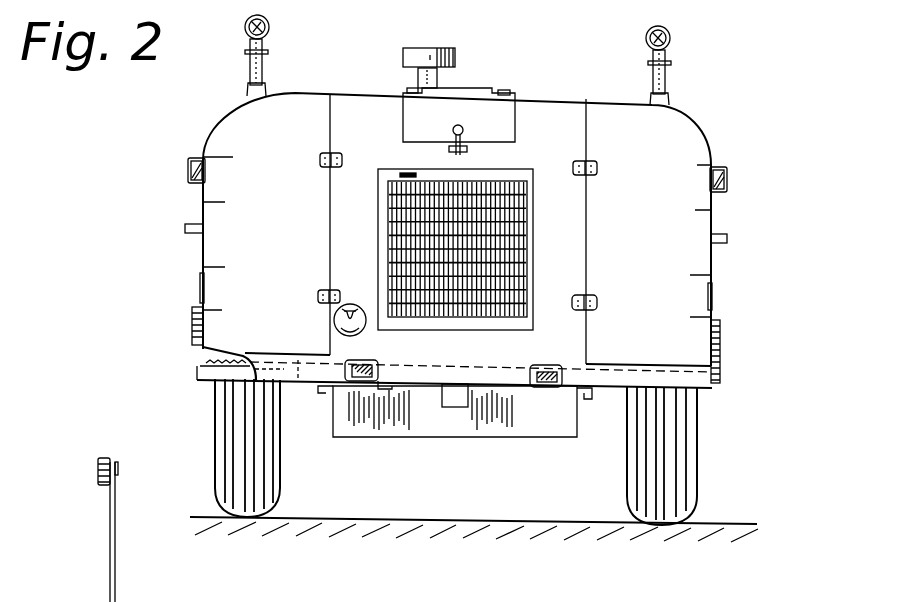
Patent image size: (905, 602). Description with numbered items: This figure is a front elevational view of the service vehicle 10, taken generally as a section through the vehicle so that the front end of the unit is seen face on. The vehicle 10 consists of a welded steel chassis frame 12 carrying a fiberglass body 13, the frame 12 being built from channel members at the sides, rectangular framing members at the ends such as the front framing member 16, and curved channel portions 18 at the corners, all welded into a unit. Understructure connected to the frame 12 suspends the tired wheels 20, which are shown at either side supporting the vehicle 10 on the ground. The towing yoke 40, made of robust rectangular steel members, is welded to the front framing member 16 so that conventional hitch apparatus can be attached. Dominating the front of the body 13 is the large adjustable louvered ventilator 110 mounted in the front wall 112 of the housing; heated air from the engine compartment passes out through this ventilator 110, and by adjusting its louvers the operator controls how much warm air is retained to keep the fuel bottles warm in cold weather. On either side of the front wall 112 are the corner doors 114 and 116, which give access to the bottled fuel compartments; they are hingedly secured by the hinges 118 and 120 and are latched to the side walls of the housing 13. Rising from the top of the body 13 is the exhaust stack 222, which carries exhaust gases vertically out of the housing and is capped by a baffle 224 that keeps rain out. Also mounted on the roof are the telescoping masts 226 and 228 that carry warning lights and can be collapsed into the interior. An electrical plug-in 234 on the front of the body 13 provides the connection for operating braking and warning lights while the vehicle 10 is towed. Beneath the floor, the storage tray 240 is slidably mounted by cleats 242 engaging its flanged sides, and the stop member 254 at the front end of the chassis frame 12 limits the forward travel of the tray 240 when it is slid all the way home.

The service vehicle 10 is at (750, 307).
The chassis frame 12 is at (578, 184).
The body 13 is at (560, 100).
The rectangular end framing member 16 is at (503, 380).
The curved channel portion 18 is at (218, 372).
The tired wheels 20 is at (223, 464).
The towing yoke 40 is at (370, 382).
The adjustable louvered ventilator 110 is at (403, 240).
The front wall 112 is at (562, 151).
The corner door 114 is at (218, 132).
The corner door 116 is at (693, 151).
The hinge 118 is at (333, 156).
The hinge 120 is at (592, 296).
The exhaust stack 222 is at (437, 76).
The baffle 224 is at (413, 53).
The mast 226 is at (668, 90).
The mast 228 is at (245, 63).
The electrical plug-in 234 is at (334, 325).
The storage tray 240 is at (347, 439).
The cleats 242 is at (320, 392).
The stop member 254 is at (452, 398).